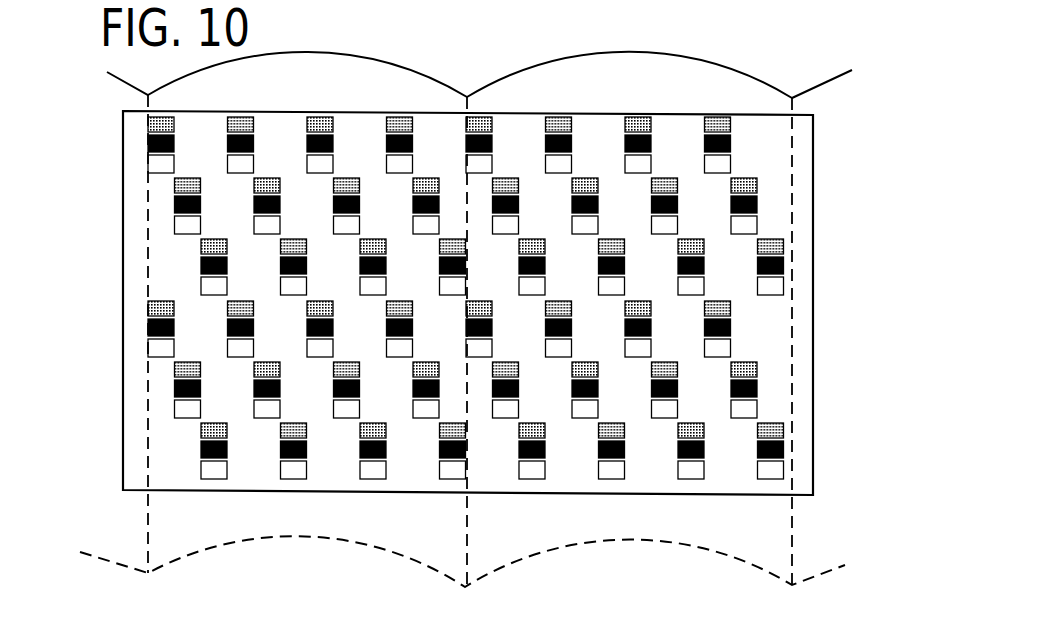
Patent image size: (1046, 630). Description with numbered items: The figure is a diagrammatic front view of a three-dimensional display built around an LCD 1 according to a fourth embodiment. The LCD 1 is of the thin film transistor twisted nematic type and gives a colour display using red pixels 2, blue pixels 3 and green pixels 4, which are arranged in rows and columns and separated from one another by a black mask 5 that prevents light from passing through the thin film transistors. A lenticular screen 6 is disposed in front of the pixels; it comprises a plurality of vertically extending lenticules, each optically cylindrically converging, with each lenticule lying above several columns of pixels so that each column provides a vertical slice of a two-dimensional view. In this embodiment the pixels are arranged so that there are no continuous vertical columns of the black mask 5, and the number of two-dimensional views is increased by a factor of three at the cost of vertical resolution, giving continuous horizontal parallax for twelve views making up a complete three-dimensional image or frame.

The LCD 1 is at (793, 330).
The red pixels 2 is at (150, 122).
The blue pixels 3 is at (150, 146).
The green pixels 4 is at (150, 160).
The black mask 5 is at (570, 478).
The lenticular screen 6 is at (707, 88).